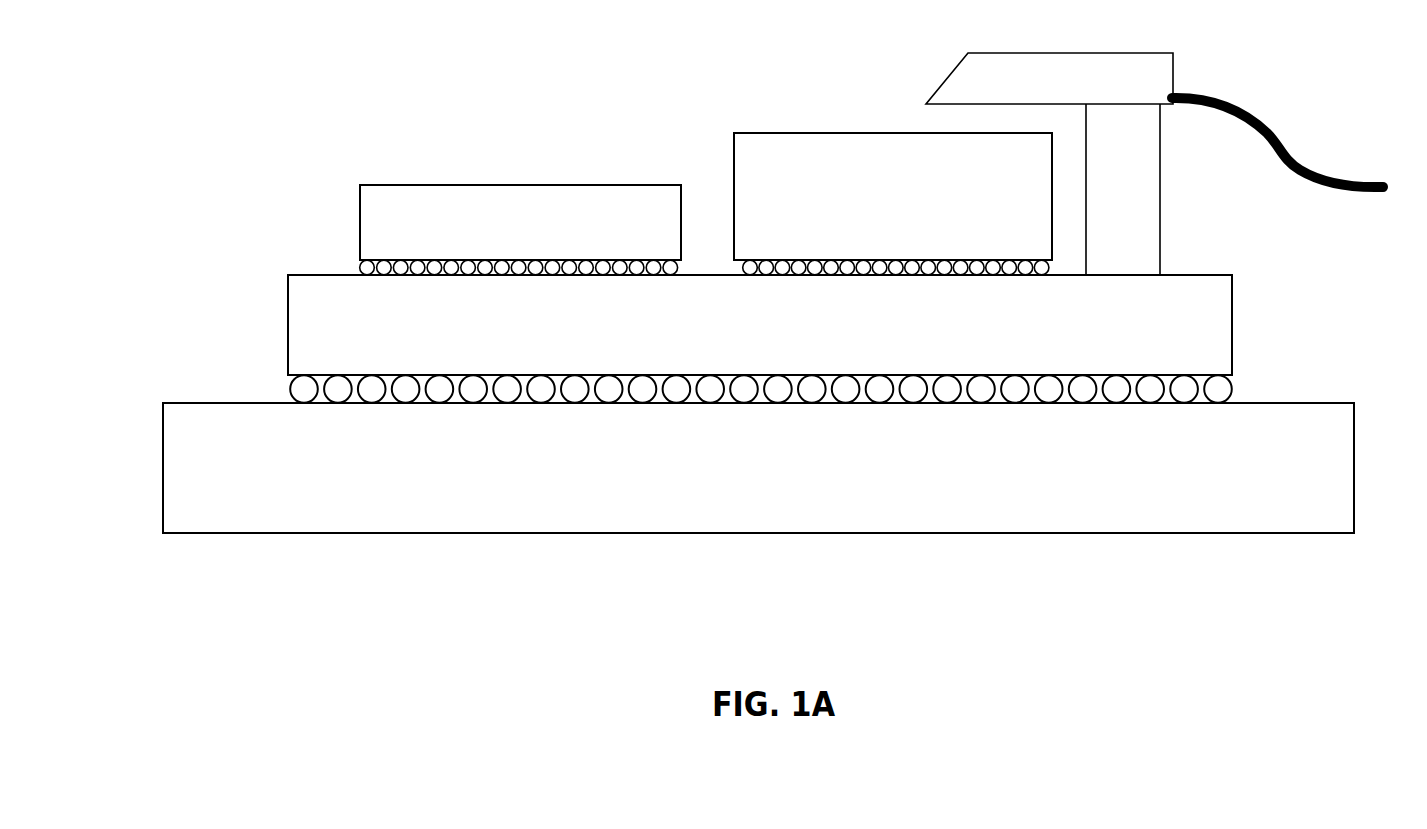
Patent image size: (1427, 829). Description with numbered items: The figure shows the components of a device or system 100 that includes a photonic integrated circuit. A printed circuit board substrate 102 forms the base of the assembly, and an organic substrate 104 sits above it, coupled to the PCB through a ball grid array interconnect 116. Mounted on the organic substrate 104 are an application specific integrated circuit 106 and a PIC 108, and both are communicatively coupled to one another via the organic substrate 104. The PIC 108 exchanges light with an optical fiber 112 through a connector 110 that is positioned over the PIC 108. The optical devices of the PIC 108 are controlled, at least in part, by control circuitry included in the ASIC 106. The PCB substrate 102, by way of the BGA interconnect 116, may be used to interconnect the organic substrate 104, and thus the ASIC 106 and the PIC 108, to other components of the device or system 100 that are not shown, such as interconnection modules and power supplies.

The device or system 100 is at (399, 100).
The printed circuit board (PCB) substrate 102 is at (758, 468).
The organic substrate 104 is at (760, 325).
The application specific integrated circuit (ASIC) 106 is at (520, 222).
The PIC 108 is at (893, 196).
The connector 110 is at (1049, 164).
The optical fiber 112 is at (1248, 103).
The ball grid array (BGA) interconnect 116 is at (362, 268).